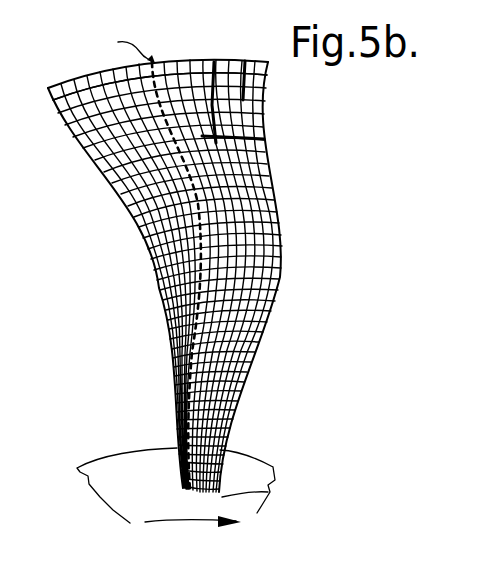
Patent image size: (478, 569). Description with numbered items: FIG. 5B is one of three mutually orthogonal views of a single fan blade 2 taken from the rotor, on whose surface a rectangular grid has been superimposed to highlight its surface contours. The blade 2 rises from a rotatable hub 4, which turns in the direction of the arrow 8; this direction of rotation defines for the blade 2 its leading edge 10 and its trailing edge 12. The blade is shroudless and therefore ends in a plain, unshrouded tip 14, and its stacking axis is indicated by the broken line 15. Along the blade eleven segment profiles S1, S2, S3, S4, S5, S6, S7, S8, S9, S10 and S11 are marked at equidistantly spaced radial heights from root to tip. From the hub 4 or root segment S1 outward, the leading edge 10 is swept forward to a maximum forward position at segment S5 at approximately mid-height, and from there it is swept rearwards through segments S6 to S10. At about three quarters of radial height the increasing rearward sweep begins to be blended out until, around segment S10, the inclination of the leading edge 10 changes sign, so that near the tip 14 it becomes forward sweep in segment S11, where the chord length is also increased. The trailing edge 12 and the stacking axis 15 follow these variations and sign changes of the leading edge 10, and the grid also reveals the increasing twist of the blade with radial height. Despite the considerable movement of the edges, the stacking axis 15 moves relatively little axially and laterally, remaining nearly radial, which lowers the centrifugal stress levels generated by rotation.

The fan blade 2 is at (128, 151).
The hub 4 is at (121, 467).
The arrow indicating direction of rotation 8 is at (162, 518).
The leading edge 10 is at (278, 210).
The trailing edge 12 is at (140, 228).
The tip 14 is at (170, 60).
The stacking axis 15 is at (124, 48).
The root segment S1 is at (268, 492).
The blade segment profile S2 is at (228, 451).
The blade segment profile S3 is at (240, 410).
The blade segment profile S4 is at (244, 373).
The maximum forward segment S5 is at (263, 331).
The blade segment profile S6 is at (279, 278).
The blade segment profile S7 is at (282, 233).
The blade segment profile S8 is at (276, 191).
The blade segment profile S9 is at (265, 147).
The blade segment profile S10 is at (263, 105).
The tip segment S11 is at (270, 63).